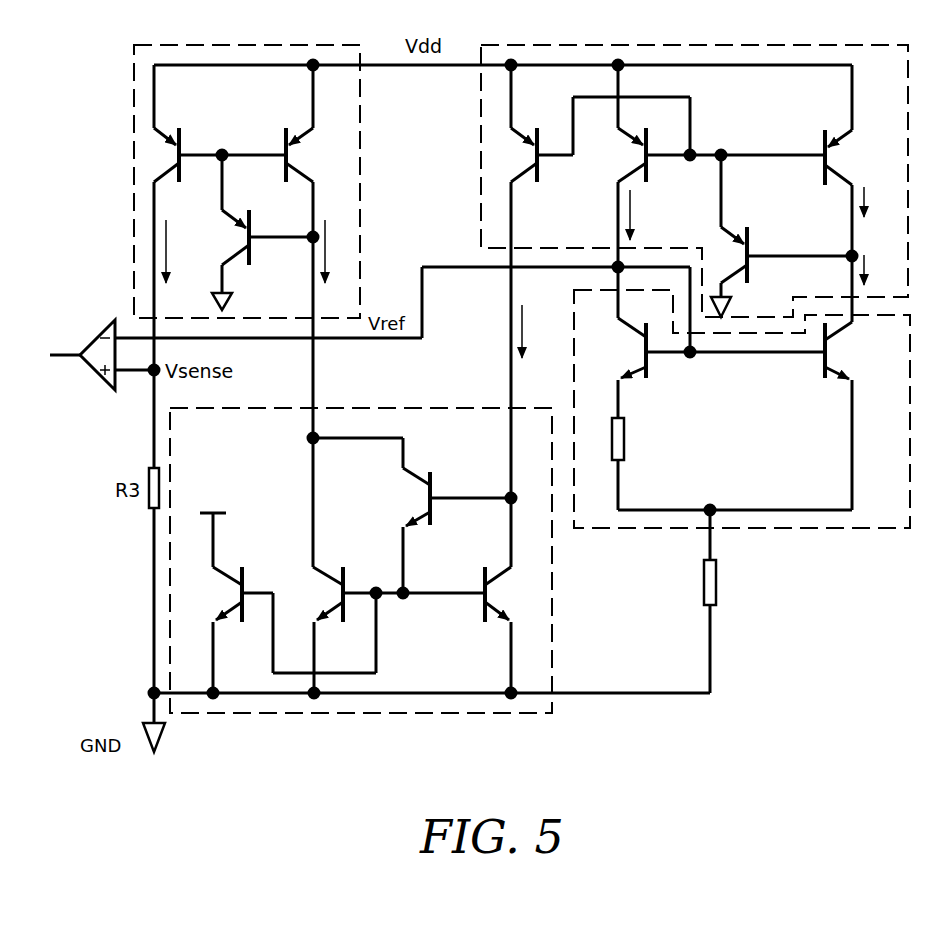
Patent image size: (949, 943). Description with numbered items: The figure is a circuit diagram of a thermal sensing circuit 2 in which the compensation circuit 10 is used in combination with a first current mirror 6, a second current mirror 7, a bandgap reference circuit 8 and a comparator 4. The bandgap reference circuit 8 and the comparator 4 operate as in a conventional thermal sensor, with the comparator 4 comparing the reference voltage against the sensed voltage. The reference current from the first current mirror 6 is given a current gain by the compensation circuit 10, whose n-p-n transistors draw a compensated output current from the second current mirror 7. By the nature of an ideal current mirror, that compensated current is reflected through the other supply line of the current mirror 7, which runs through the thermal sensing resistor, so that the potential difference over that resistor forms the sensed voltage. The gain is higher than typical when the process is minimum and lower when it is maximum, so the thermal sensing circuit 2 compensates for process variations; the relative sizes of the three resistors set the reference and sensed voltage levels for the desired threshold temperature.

The thermal sensing circuit 2 is at (750, 635).
The comparator 4 is at (100, 300).
The first current mirror 6 is at (683, 45).
The second current mirror 7 is at (248, 45).
The bandgap reference circuit 8 is at (872, 528).
The compensation circuit 10 is at (552, 612).